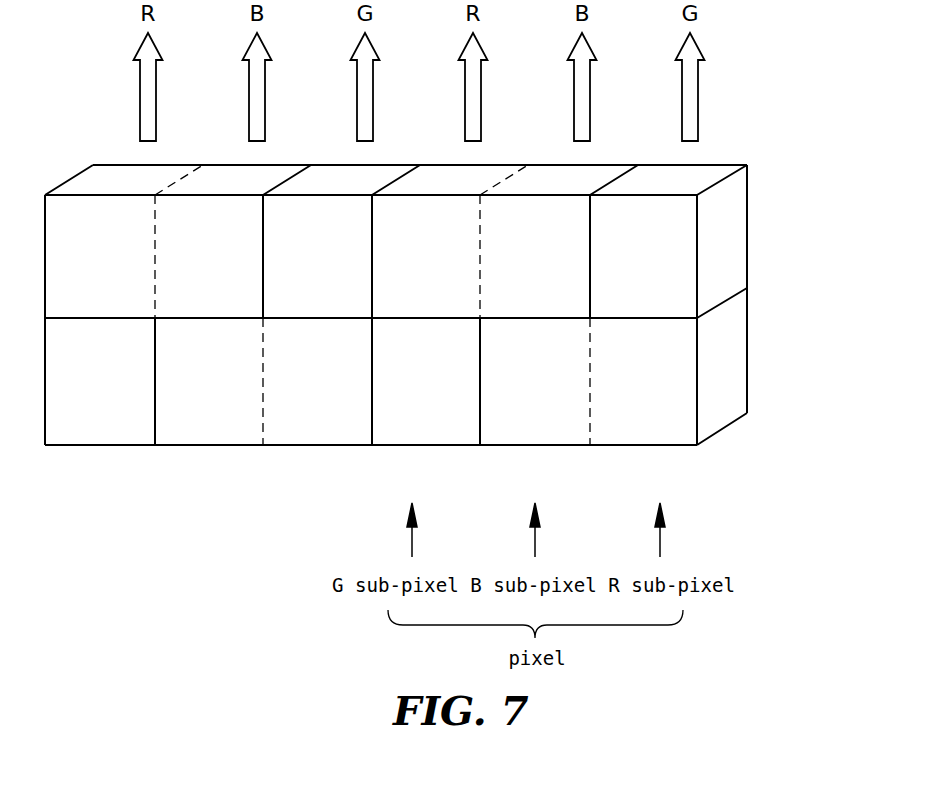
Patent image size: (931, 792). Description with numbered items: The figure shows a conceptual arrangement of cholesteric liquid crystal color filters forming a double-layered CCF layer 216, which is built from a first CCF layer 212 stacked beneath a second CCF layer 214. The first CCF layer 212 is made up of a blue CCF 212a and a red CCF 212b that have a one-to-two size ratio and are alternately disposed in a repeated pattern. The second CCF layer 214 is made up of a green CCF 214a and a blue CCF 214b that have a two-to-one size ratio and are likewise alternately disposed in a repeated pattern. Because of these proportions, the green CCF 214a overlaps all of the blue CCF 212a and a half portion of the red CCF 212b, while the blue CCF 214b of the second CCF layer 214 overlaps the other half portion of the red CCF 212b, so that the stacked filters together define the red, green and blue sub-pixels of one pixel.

The double-layered CCF layer 216 is at (455, 317).
The second CCF layer 214 is at (427, 211).
The first CCF layer 212 is at (427, 409).
The green (G) CCF 214a is at (45, 197).
The blue (B) CCF 214b is at (317, 207).
The blue (B) CCF 212a is at (102, 427).
The red (R) CCF 212b is at (155, 447).